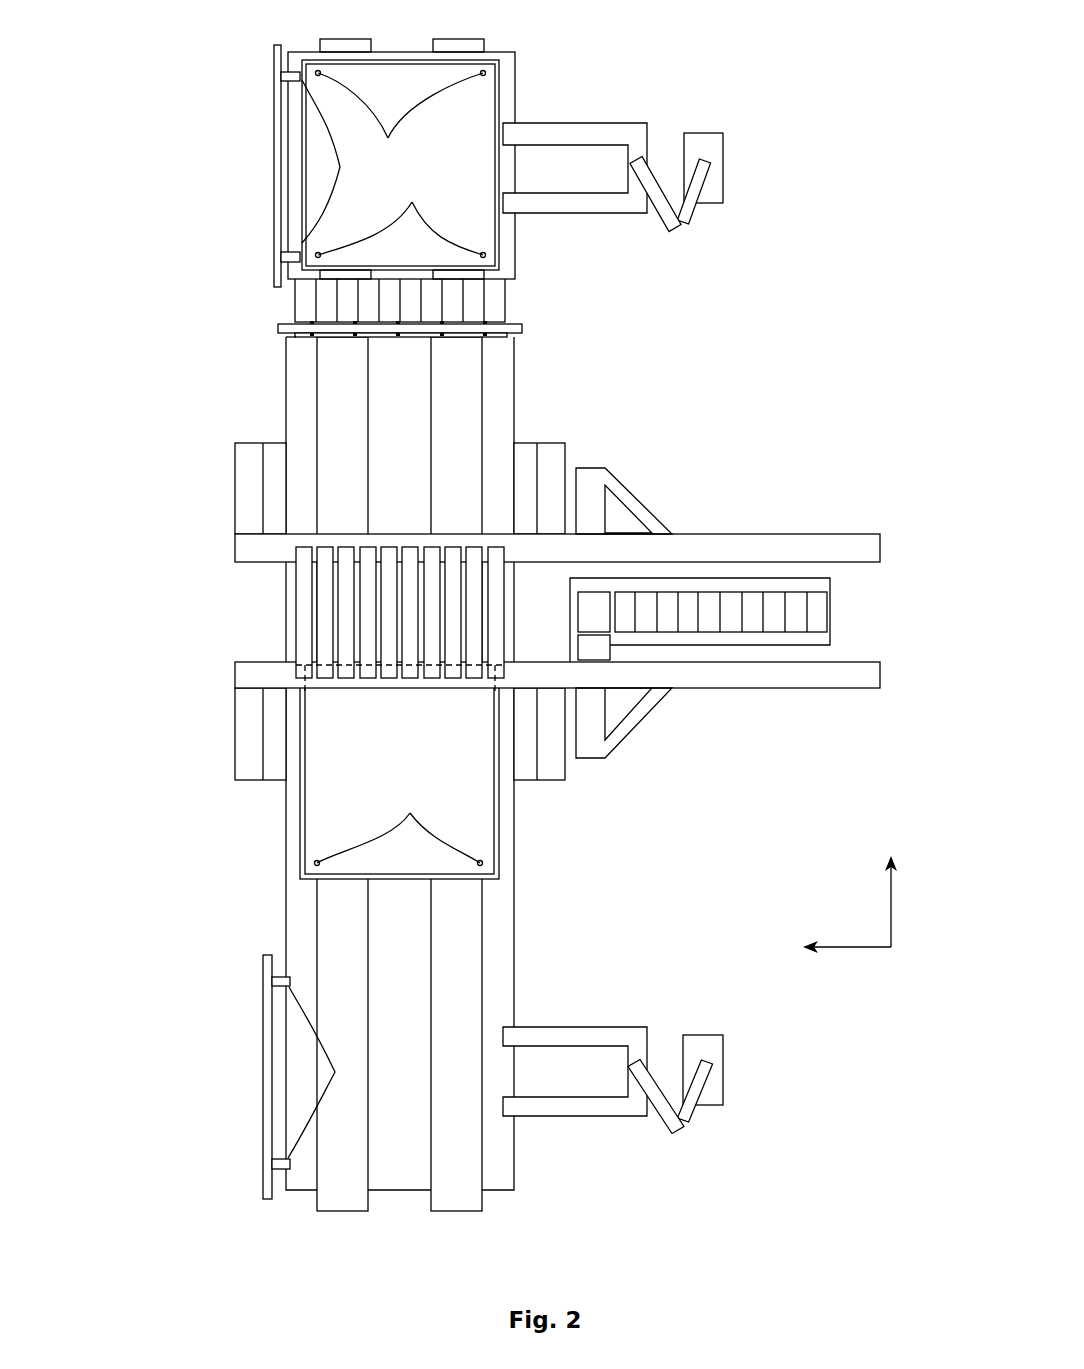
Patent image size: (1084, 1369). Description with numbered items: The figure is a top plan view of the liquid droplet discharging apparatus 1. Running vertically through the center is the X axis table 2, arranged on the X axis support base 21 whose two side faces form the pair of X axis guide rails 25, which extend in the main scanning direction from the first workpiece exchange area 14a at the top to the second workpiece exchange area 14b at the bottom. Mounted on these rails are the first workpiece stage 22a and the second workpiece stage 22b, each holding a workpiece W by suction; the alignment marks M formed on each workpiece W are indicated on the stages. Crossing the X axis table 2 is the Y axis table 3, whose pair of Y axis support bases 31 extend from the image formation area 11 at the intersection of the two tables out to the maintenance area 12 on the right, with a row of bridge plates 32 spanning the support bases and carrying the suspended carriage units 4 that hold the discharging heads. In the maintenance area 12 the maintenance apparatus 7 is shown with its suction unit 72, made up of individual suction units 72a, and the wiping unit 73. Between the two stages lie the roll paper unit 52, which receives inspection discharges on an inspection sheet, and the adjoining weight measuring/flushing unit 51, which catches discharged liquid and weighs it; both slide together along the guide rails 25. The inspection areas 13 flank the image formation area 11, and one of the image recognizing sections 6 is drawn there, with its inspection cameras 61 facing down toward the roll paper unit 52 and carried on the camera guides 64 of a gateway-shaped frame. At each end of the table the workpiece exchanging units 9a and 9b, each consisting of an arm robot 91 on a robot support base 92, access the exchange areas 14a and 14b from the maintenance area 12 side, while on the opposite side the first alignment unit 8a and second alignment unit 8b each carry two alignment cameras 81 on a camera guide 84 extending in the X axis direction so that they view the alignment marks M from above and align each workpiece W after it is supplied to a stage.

The liquid droplet discharging apparatus 1 is at (857, 66).
The X axis table 2 is at (390, 1240).
The X axis support base 21 is at (497, 1192).
The first workpiece stage 22a is at (517, 85).
The second workpiece stage 22b is at (500, 856).
The X axis guide rails 25 is at (342, 1213).
The Y axis table 3 is at (200, 612).
The Y axis support bases 31 is at (237, 550).
The bridge plates 32 is at (345, 547).
The carriage units 4 is at (284, 614).
The weight measuring/flushing unit 51 is at (507, 296).
The roll paper unit 52 is at (492, 338).
The image recognizing sections 6 is at (265, 327).
The inspection cameras 61 is at (355, 336).
The camera guides 64 is at (291, 340).
The maintenance apparatus 7 is at (706, 437).
The suction unit 72 is at (727, 485).
The individual suction units 72a is at (647, 592).
The wiping unit 73 is at (590, 592).
The first alignment unit 8a is at (265, 160).
The second alignment unit 8b is at (253, 1070).
The alignment cameras 81 is at (335, 161).
The camera guide 84 is at (275, 272).
The first workpiece exchanging unit 9a is at (704, 40).
The second workpiece exchanging unit 9b is at (684, 1196).
The arm robot 91 is at (654, 90).
The robot support base 92 is at (708, 133).
The image formation area 11 is at (144, 582).
The maintenance area 12 is at (729, 753).
The inspection areas 13 is at (188, 296).
The first workpiece exchange area 14a is at (188, 151).
The second workpiece exchange area 14b is at (176, 1062).
The workpiece W is at (490, 228).
The alignment mark M is at (400, 468).